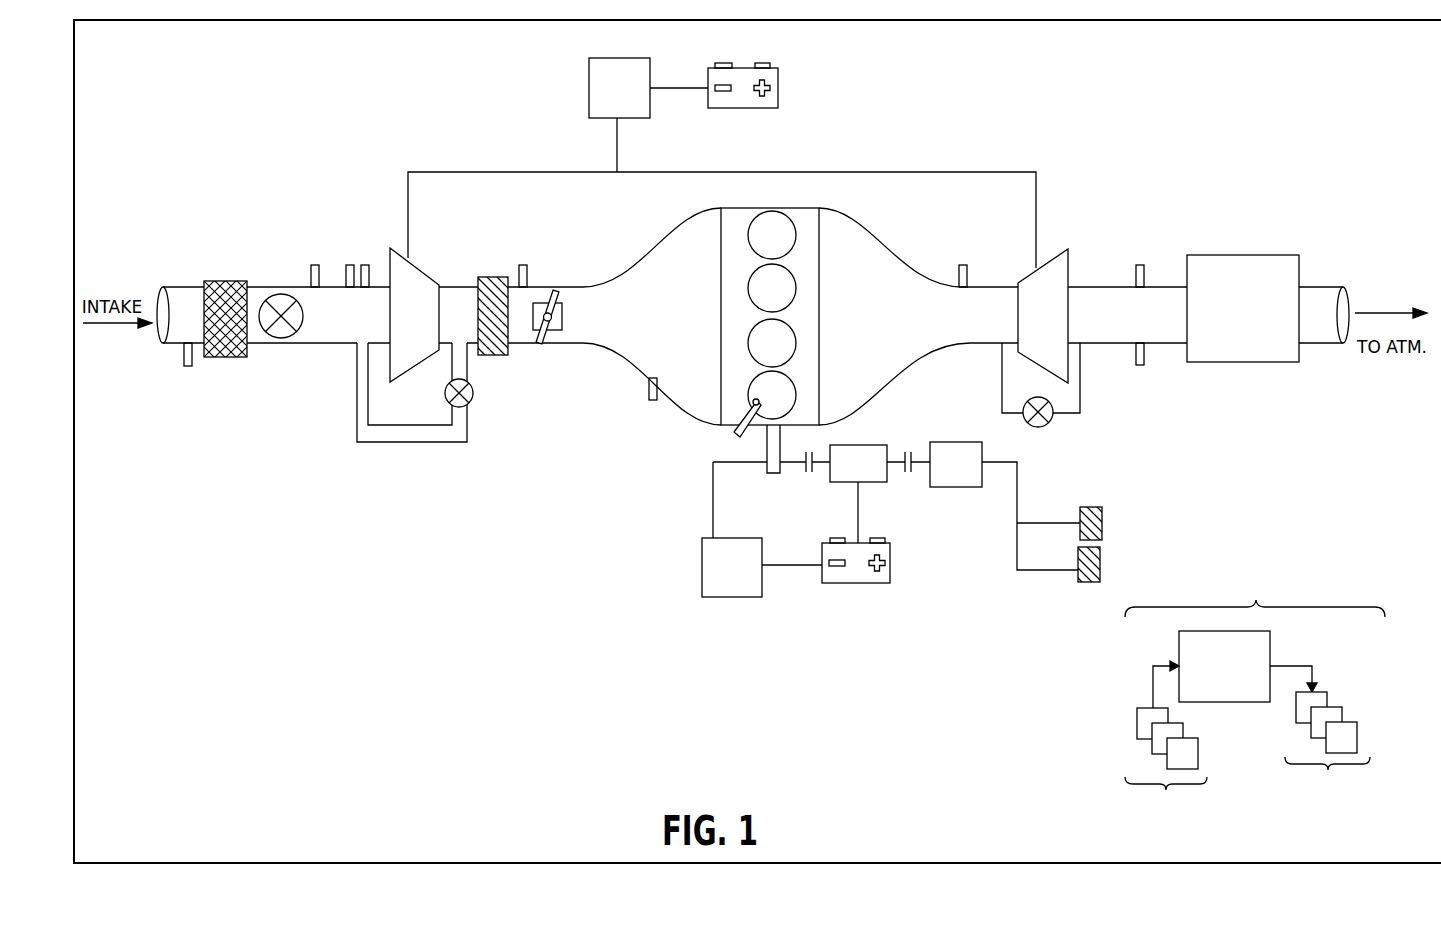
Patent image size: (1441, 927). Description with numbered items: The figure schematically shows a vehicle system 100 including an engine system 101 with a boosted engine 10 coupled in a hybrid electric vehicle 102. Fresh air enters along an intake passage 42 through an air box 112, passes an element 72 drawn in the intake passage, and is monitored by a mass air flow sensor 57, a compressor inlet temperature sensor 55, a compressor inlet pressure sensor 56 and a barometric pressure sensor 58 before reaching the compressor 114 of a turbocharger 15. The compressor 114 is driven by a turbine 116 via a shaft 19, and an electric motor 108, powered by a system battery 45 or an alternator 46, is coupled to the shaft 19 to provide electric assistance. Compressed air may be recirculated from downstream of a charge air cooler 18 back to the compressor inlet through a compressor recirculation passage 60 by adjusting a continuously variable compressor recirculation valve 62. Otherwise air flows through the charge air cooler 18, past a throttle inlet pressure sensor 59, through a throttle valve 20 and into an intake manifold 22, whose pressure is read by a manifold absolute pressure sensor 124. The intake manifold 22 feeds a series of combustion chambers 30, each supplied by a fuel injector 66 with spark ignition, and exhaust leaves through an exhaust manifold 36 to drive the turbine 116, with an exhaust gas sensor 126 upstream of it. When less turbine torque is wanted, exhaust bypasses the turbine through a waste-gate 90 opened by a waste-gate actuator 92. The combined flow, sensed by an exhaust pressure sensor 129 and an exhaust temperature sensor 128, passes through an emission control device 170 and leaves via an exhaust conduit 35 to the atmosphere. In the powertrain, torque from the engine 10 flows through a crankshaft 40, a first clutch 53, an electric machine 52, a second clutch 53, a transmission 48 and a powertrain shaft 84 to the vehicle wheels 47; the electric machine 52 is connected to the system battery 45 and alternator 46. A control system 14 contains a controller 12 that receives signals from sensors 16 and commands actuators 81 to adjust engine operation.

The vehicle system 100 is at (1354, 110).
The engine system 101 is at (1092, 170).
The vehicle 102 is at (1345, 20).
The engine 10 is at (820, 297).
The controller 12 is at (1224, 666).
The control system 14 is at (1255, 587).
The turbocharger 15 is at (448, 212).
The sensors 16 is at (1166, 747).
The charge air cooler 18 is at (490, 277).
The shaft 19 is at (935, 172).
The throttle valve 20 is at (562, 320).
The intake manifold 22 is at (652, 316).
The combustion chambers 30 is at (792, 228).
The exhaust conduit 35 is at (1322, 287).
The exhaust manifold 36 is at (918, 316).
The crankshaft 40 is at (767, 470).
The intake passage 42 is at (173, 344).
The system battery 45 is at (745, 108).
The alternator 46 is at (762, 529).
The vehicle wheels 47 is at (1080, 512).
The transmission 48 is at (956, 464).
The electric machine 52 is at (841, 483).
The clutch 53 is at (806, 472).
The temperature sensor 55 is at (350, 265).
The pressure sensor 56 is at (365, 265).
The mass air flow sensor 57 is at (315, 265).
The barometric pressure sensor 58 is at (188, 366).
The throttle inlet pressure sensor 59 is at (523, 265).
The compressor recirculation passage 60 is at (425, 425).
The continuously variable compressor recirculation valve 62 is at (471, 397).
The fuel injector 66 is at (733, 438).
The intake air valve 72 is at (281, 294).
The actuators 81 is at (1320, 741).
The powertrain shaft 84 is at (996, 466).
The waste-gate 90 is at (1002, 398).
The waste-gate actuator 92 is at (1048, 423).
The electric motor 108 is at (648, 88).
The air box 112 is at (218, 281).
The compressor 114 is at (434, 315).
The turbine 116 is at (1102, 316).
The manifold absolute pressure sensor 124 is at (651, 386).
The exhaust gas sensor 126 is at (963, 265).
The exhaust temperature sensor 128 is at (1140, 365).
The exhaust pressure sensor 129 is at (1140, 265).
The emission control device 170 is at (1232, 255).